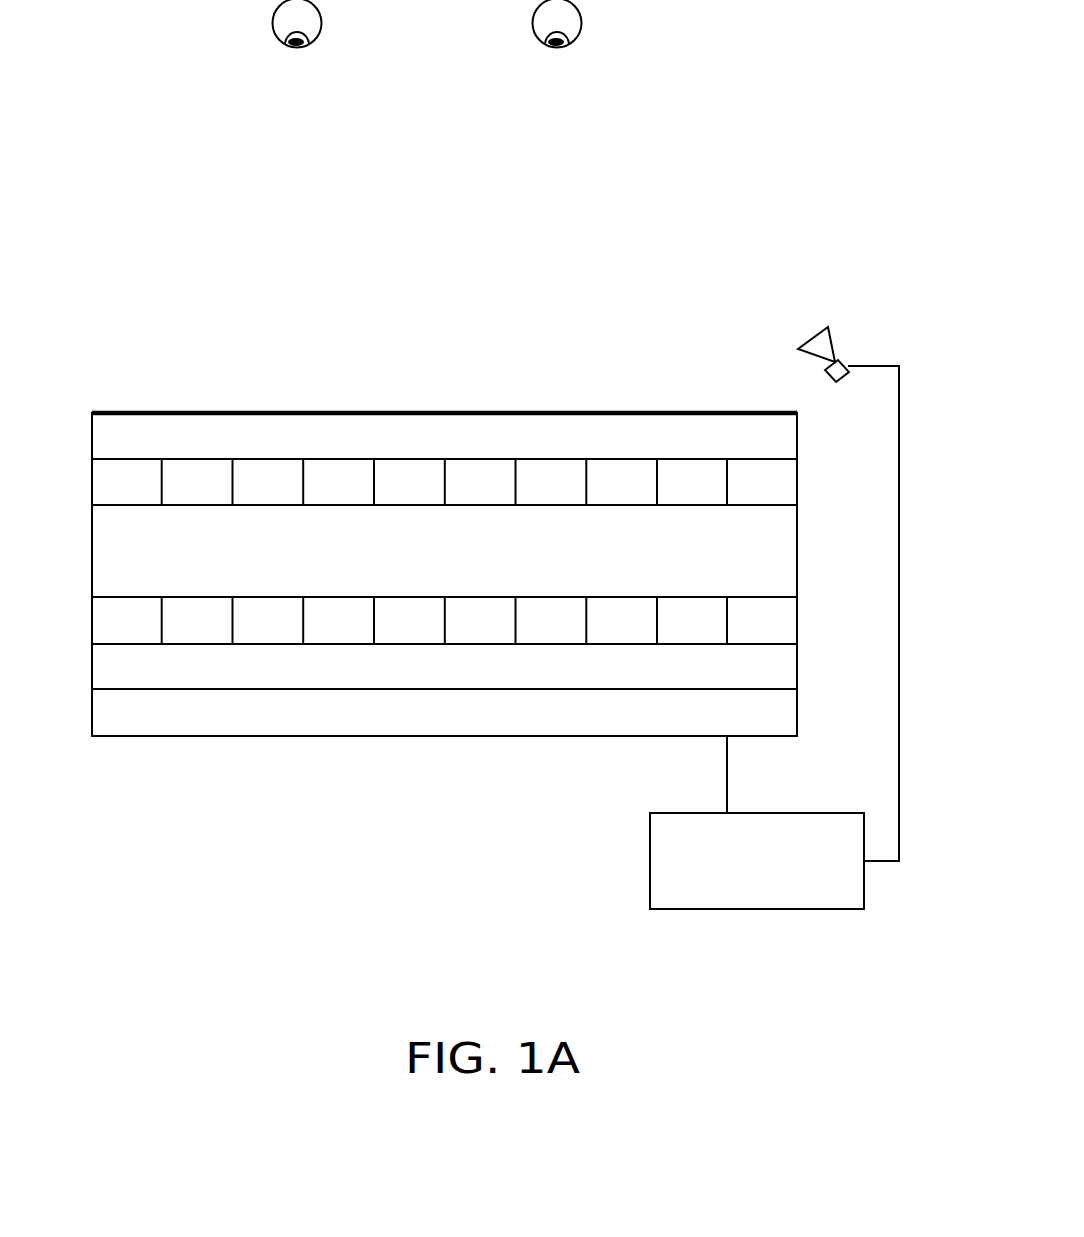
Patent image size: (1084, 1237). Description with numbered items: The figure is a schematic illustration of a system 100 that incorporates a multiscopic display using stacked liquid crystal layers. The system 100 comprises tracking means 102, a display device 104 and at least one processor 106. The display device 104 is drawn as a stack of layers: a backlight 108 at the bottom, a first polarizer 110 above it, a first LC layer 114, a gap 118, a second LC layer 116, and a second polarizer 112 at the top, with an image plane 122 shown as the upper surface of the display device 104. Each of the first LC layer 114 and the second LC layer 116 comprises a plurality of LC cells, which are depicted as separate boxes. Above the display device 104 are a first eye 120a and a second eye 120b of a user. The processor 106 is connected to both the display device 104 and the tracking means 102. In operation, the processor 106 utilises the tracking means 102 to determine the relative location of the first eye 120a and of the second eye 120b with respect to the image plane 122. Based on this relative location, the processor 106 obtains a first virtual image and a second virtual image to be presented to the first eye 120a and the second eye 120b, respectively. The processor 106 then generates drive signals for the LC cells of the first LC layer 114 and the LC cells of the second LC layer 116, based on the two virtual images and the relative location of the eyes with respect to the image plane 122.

The system 100 is at (781, 82).
The tracking means 102 is at (843, 353).
The display device 104 is at (198, 738).
The processor 106 is at (774, 637).
The backlight 108 is at (444, 712).
The first polarizer 110 is at (444, 666).
The second polarizer 112 is at (444, 436).
The first LC layer 114 is at (444, 620).
The second LC layer 116 is at (444, 482).
The gap 118 is at (444, 551).
The first eye 120a is at (278, 25).
The second eye 120b is at (576, 26).
The image plane 122 is at (167, 412).